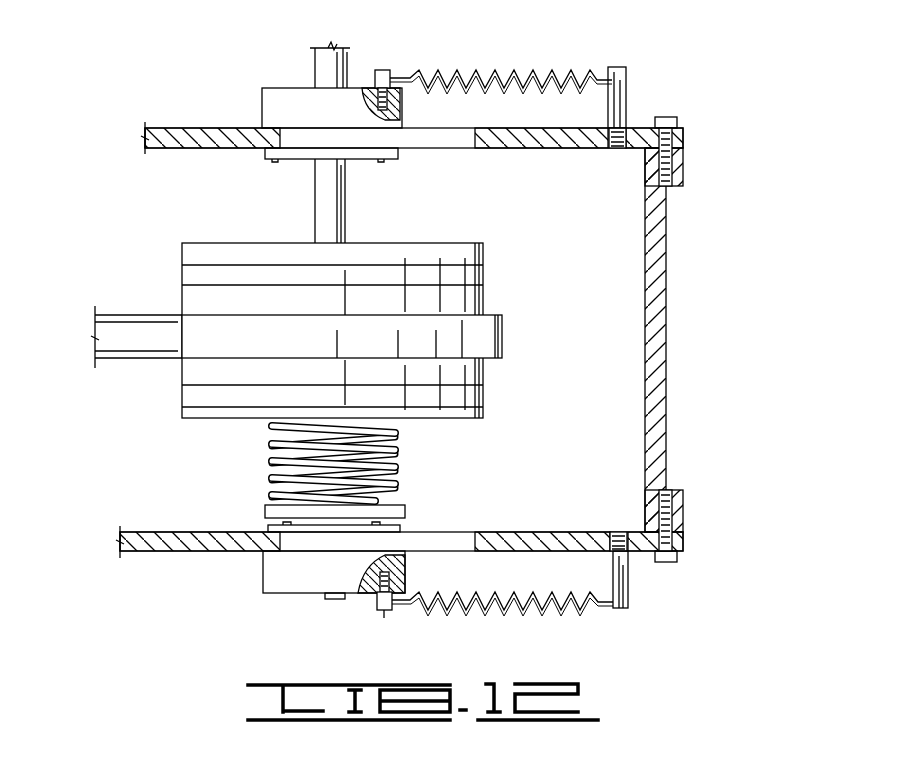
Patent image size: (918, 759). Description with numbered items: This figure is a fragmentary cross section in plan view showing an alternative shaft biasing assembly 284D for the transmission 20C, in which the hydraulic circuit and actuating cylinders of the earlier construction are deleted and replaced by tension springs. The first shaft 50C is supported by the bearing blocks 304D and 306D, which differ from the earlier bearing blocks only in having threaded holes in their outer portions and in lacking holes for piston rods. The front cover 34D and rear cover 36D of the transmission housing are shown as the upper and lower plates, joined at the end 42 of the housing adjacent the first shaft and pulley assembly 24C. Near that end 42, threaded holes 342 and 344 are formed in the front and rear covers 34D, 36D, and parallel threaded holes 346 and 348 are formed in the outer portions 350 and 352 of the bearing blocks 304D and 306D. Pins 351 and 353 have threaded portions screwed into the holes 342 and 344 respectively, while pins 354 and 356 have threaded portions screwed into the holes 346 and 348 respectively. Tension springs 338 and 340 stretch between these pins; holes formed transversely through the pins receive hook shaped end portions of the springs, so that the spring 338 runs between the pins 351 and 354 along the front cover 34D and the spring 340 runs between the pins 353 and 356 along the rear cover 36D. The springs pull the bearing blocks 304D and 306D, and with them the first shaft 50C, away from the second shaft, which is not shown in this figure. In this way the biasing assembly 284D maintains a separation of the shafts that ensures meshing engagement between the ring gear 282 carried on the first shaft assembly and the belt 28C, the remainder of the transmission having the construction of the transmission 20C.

The transmission 20C is at (700, 98).
The first shaft and pulley assembly 24C is at (240, 243).
The belt 28C is at (125, 326).
The front cover 34D is at (525, 548).
The rear cover 36D is at (545, 137).
The end of the transmission housing 42 is at (672, 250).
The first shaft 50C is at (345, 222).
The ring gear 282 is at (490, 335).
The shaft biasing assembly 284D is at (283, 86).
The bearing block 304D is at (278, 572).
The bearing block 306D is at (320, 95).
The tension spring 338 is at (545, 605).
The tension spring 340 is at (542, 70).
The threaded hole 342 is at (620, 532).
The threaded hole 344 is at (617, 140).
The threaded hole 346 is at (385, 590).
The threaded hole 348 is at (390, 80).
The outer portion of bearing block 350 is at (285, 587).
The pin 351 is at (628, 577).
The outer portion of bearing block 352 is at (262, 98).
The pin 353 is at (618, 68).
The pin 354 is at (386, 612).
The pin 356 is at (386, 70).